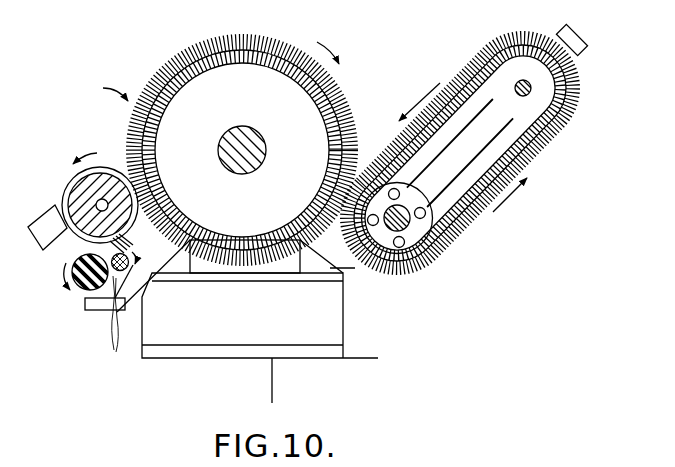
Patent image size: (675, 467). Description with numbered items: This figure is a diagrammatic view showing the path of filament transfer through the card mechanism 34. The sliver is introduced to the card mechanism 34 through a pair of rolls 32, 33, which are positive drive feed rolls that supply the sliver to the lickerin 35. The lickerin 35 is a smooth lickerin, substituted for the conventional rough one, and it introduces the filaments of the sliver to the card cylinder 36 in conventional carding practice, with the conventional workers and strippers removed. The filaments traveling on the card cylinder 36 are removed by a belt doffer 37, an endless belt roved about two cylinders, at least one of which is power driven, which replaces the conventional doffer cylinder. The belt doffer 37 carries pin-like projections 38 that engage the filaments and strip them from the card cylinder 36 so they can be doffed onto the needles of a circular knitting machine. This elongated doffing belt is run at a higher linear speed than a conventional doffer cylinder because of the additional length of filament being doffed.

The feed roll 32 is at (80, 290).
The feed roll 33 is at (138, 270).
The card mechanism 34 is at (127, 101).
The lickerin 35 is at (78, 195).
The card cylinder 36 is at (337, 86).
The belt doffer 37 is at (462, 218).
The pin-like projections 38 is at (540, 142).